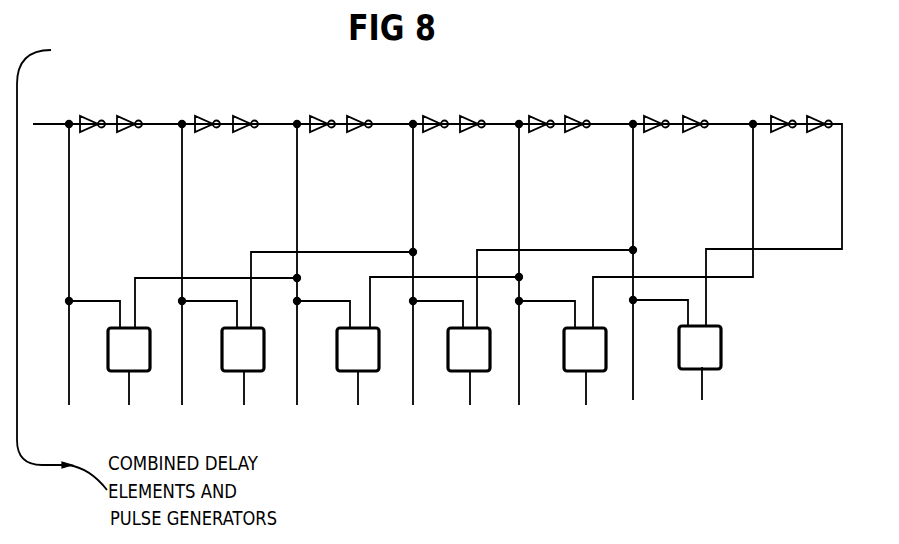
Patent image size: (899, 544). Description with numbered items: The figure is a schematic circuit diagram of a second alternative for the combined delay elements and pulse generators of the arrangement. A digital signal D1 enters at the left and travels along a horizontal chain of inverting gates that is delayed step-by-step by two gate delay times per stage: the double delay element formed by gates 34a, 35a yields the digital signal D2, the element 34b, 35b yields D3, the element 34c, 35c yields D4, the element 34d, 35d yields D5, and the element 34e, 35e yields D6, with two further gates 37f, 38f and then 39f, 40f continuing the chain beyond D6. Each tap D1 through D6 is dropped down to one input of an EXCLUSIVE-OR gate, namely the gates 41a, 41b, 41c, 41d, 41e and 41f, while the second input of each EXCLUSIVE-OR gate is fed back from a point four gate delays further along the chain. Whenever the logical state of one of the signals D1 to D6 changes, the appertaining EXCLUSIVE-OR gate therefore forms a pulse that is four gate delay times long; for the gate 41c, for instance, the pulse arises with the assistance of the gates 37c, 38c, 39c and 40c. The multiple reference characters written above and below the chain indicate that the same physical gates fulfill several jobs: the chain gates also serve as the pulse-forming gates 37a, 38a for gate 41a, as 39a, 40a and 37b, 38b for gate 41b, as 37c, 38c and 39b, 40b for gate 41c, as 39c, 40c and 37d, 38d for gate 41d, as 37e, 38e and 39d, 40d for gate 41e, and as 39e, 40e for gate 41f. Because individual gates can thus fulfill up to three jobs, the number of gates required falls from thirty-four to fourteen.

The digital signal D1 is at (59, 113).
The digital signal D2 is at (172, 113).
The digital signal D3 is at (289, 113).
The digital signal D4 is at (400, 112).
The digital signal D5 is at (508, 113).
The digital signal D6 is at (624, 111).
The double delay element gate 34a is at (87, 105).
The double delay element gate 35a is at (128, 105).
The double delay element gate 34b is at (202, 105).
The double delay element gate 35b is at (246, 105).
The double delay element gate 34c is at (318, 105).
The double delay element gate 35c is at (361, 105).
The double delay element gate 34d is at (430, 105).
The double delay element gate 35d is at (471, 105).
The double delay element gate 34e is at (537, 105).
The double delay element gate 35e is at (580, 105).
The pulse-forming gate 37a is at (88, 141).
The pulse-forming gate 38a is at (136, 141).
The pulse-forming gate 37b is at (204, 155).
The pulse-forming gate 38b is at (252, 155).
The pulse-forming gate 37c is at (319, 141).
The pulse-forming gate 38c is at (365, 141).
The pulse-forming gate 37d is at (434, 155).
The pulse-forming gate 38d is at (481, 155).
The pulse-forming gate 37e is at (540, 141).
The pulse-forming gate 38e is at (582, 141).
The pulse-forming gate 37f is at (653, 104).
The pulse-forming gate 38f is at (699, 104).
The pulse-forming gate 39a is at (204, 141).
The pulse-forming gate 40a is at (252, 141).
The pulse-forming gate 39b is at (319, 155).
The pulse-forming gate 40b is at (366, 155).
The pulse-forming gate 39c is at (434, 141).
The pulse-forming gate 40c is at (481, 141).
The pulse-forming gate 39d is at (540, 155).
The pulse-forming gate 40d is at (584, 155).
The pulse-forming gate 39e is at (654, 138).
The pulse-forming gate 40e is at (700, 138).
The pulse-forming gate 39f is at (778, 104).
The pulse-forming gate 40f is at (822, 104).
The EXCLUSIVE-OR gate 41a is at (123, 367).
The EXCLUSIVE-OR gate 41b is at (238, 367).
The EXCLUSIVE-OR gate 41c is at (352, 367).
The EXCLUSIVE-OR gate 41d is at (463, 367).
The EXCLUSIVE-OR gate 41e is at (579, 367).
The EXCLUSIVE-OR gate 41f is at (692, 364).